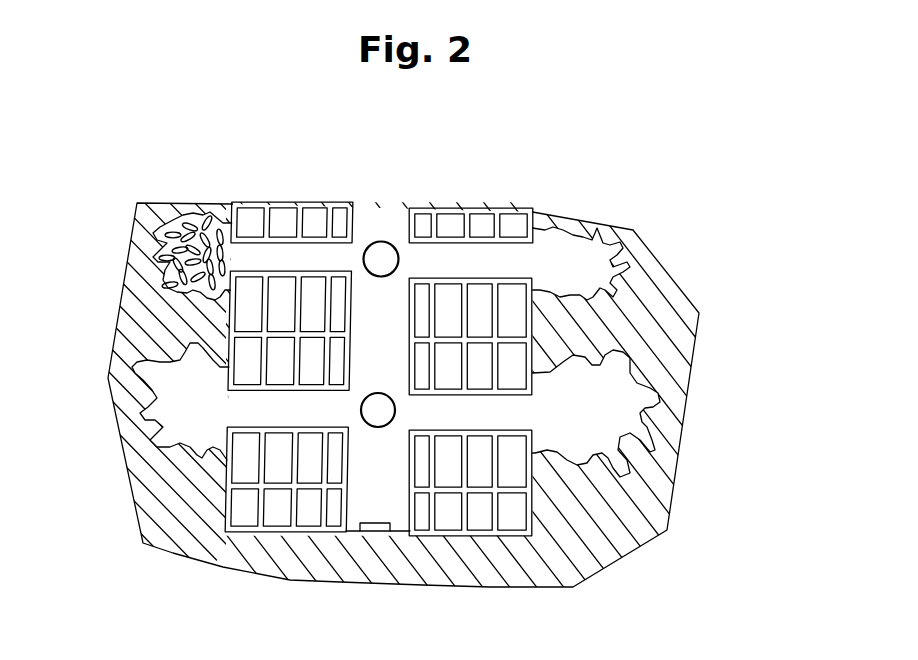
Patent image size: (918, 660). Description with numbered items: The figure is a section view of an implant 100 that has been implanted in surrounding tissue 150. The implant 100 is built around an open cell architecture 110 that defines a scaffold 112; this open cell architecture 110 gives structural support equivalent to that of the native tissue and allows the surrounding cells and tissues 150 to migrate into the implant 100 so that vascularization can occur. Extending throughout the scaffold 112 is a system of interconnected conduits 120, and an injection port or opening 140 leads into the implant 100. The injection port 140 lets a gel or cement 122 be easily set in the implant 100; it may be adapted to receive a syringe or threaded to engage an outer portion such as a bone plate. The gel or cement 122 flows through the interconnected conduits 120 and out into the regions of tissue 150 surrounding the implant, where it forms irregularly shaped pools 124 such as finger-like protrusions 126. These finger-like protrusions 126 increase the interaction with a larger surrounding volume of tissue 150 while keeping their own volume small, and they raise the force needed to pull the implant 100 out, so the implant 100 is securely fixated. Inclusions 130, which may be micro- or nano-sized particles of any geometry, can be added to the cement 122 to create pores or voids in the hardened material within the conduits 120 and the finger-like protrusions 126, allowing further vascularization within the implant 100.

The implant 100 is at (459, 353).
The open cell architecture 110 is at (428, 333).
The scaffold 112 is at (520, 210).
The system of interconnected conduits 120 is at (400, 198).
The gel or cement 122 is at (402, 363).
The irregularly shaped pools 124 is at (655, 368).
The finger-like protrusions 126 is at (607, 412).
The inclusions 130 is at (160, 204).
The injection port or opening 140 is at (385, 202).
The surrounding cells and tissues 150 is at (662, 277).